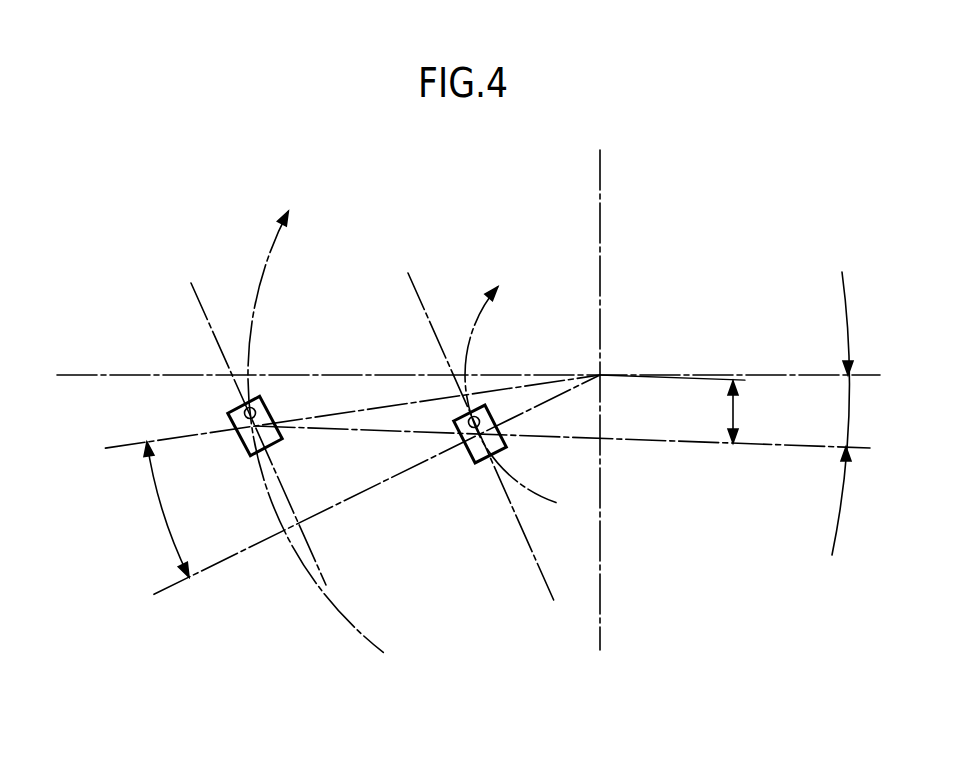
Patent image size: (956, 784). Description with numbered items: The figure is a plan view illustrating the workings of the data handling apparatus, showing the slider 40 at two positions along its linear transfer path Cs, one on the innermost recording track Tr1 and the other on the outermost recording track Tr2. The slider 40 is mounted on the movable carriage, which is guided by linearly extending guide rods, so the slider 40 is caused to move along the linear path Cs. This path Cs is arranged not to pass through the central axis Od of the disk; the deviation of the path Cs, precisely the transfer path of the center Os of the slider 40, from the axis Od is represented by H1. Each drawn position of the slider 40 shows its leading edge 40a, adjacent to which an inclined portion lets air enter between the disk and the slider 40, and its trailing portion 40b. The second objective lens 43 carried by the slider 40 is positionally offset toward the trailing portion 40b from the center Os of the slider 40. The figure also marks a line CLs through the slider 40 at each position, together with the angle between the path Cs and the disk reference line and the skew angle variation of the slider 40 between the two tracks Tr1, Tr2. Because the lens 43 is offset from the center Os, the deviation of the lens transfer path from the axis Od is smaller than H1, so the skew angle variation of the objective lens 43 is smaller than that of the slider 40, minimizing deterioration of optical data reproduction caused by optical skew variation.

The slider 40 is at (246, 455).
The leading edge 40a is at (419, 422).
The trailing portion 40b is at (455, 421).
The second objective lens 43 is at (264, 399).
The innermost recording track Tr1 is at (483, 307).
The outermost recording track Tr2 is at (269, 255).
The center of the slider Os is at (239, 433).
The central axis of the disk Od is at (602, 373).
The path of the slider Cs is at (655, 442).
The sensor center axis CLs is at (305, 538).
The deviation of the path of the slider H1 is at (747, 412).